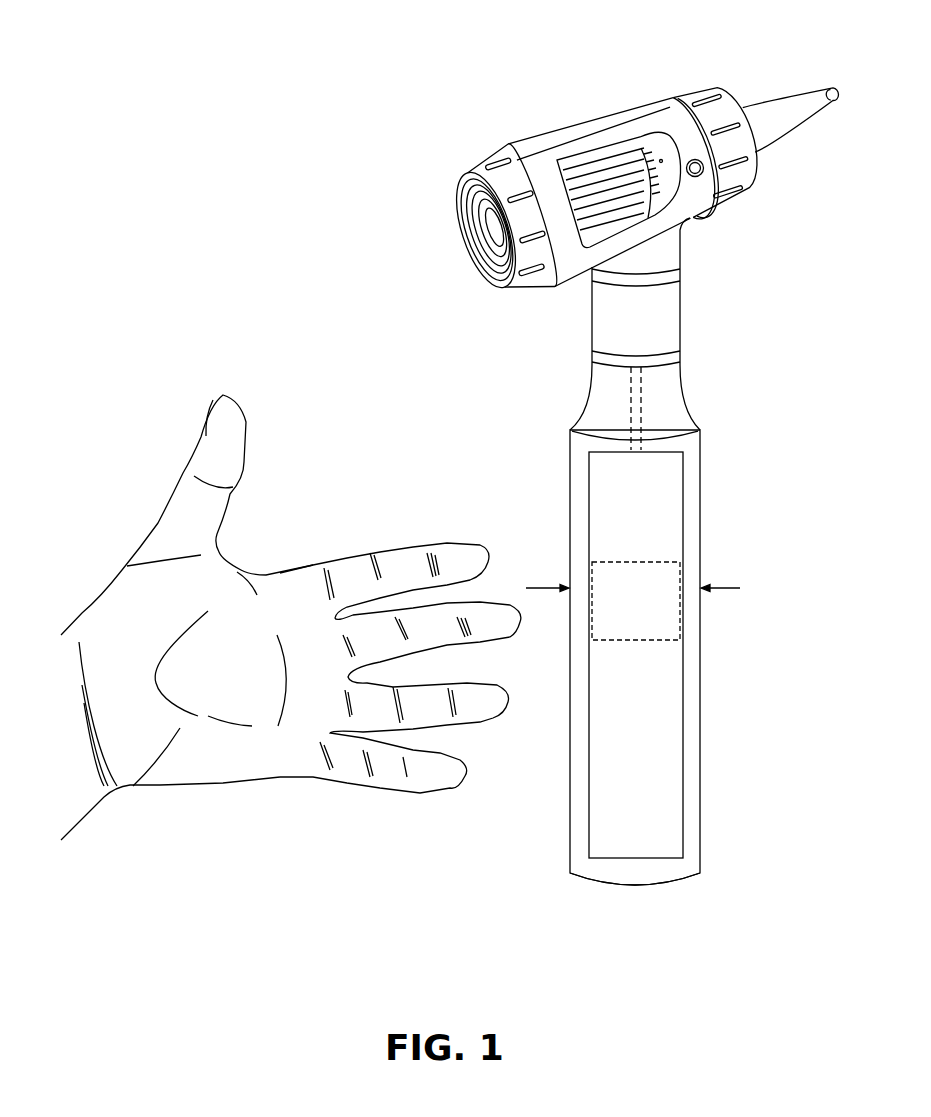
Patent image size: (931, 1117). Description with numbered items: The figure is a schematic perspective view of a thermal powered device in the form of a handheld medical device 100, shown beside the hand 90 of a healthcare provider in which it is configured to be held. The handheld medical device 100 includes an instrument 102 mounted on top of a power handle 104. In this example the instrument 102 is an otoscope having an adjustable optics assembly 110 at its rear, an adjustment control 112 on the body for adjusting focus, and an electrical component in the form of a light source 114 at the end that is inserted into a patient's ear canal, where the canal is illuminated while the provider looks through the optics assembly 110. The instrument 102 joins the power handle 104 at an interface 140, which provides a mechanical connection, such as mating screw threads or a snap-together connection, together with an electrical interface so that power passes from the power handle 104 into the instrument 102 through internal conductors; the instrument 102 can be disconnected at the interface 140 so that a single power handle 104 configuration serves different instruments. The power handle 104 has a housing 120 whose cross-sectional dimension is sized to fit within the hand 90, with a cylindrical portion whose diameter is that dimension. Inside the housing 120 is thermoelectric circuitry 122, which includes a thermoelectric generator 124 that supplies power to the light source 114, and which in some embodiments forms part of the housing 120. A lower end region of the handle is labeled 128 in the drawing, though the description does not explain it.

The hand 90 is at (222, 783).
The handheld medical device 100 is at (651, 449).
The instrument 102 is at (670, 161).
The power handle 104 is at (592, 635).
The adjustable optics assembly 110 is at (487, 230).
The adjustment control 112 is at (604, 167).
The light source 114 is at (842, 100).
The housing 120 is at (568, 440).
The thermoelectric circuitry 122 is at (590, 525).
The thermoelectric generator 124 is at (682, 633).
The end cap 128 is at (570, 866).
The interface 140 is at (707, 352).